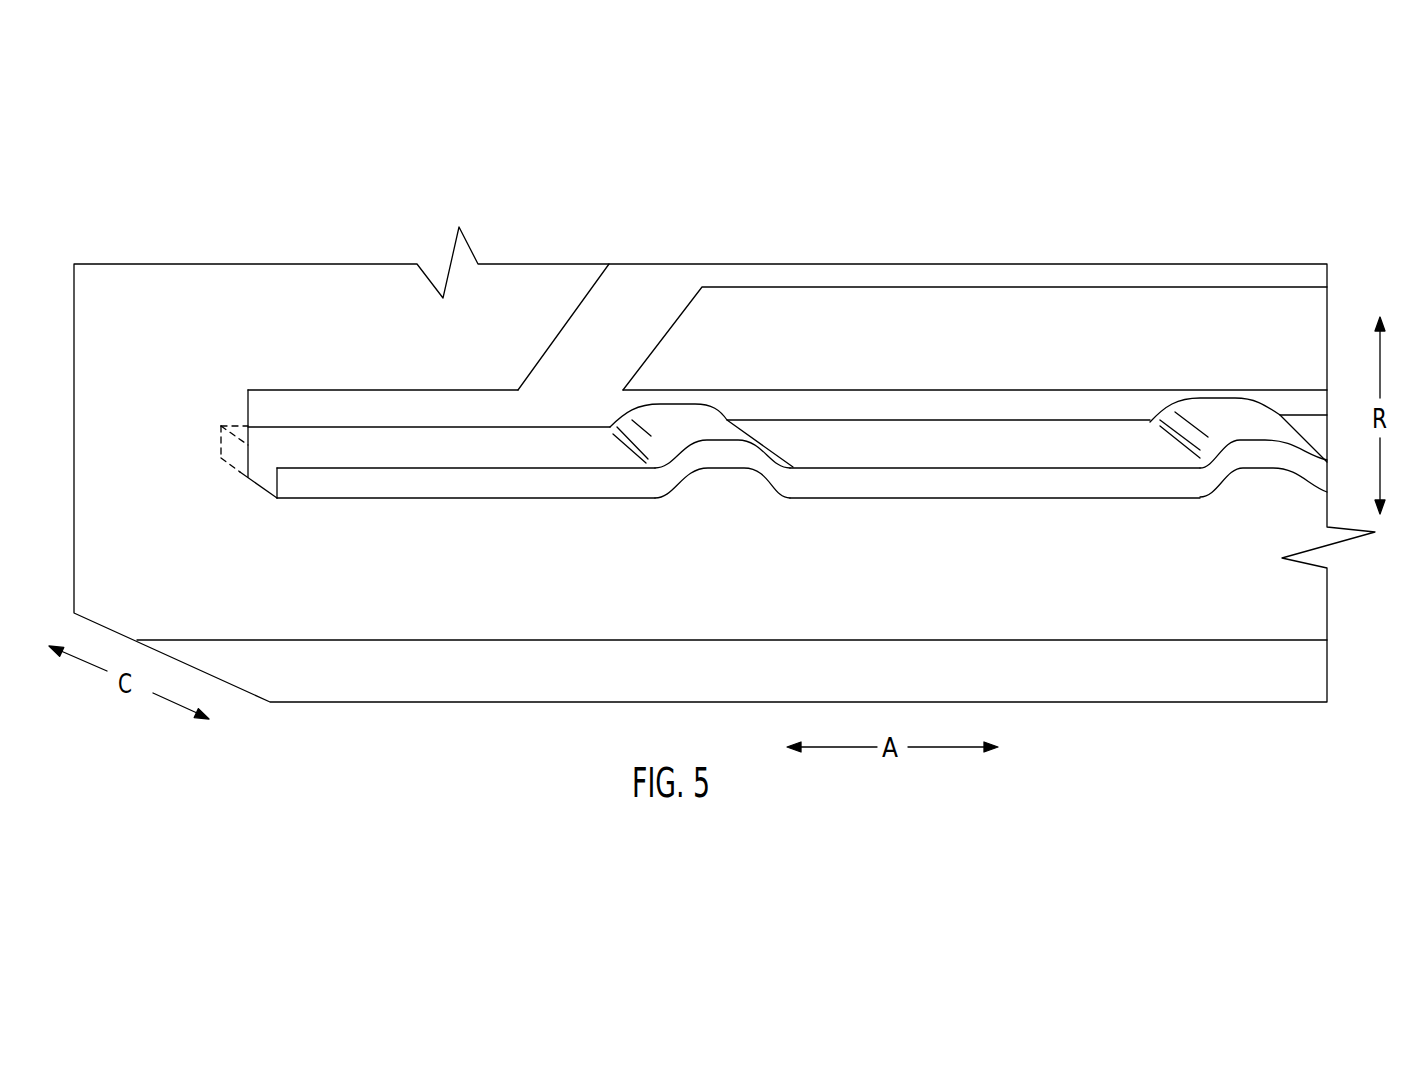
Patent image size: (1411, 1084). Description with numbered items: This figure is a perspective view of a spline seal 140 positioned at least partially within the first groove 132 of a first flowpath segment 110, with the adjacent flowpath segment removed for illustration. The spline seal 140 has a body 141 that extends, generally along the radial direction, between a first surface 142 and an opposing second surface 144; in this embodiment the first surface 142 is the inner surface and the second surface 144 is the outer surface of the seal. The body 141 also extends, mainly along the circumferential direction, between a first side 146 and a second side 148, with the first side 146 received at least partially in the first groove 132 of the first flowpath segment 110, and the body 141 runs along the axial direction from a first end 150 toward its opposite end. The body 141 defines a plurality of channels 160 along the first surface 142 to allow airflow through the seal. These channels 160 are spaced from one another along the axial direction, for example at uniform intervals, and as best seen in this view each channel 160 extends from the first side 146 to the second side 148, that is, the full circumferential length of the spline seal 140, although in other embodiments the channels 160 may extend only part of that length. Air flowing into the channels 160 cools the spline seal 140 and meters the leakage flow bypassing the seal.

The first flowpath segment 110 is at (167, 297).
The first groove 132 is at (302, 408).
The spline seal 140 is at (826, 445).
The body 141 is at (402, 500).
The first surface 142 is at (978, 499).
The second surface 144 is at (975, 455).
The first side 146 is at (208, 460).
The second side 148 is at (259, 500).
The first end 150 is at (296, 522).
The channels 160 is at (731, 494).